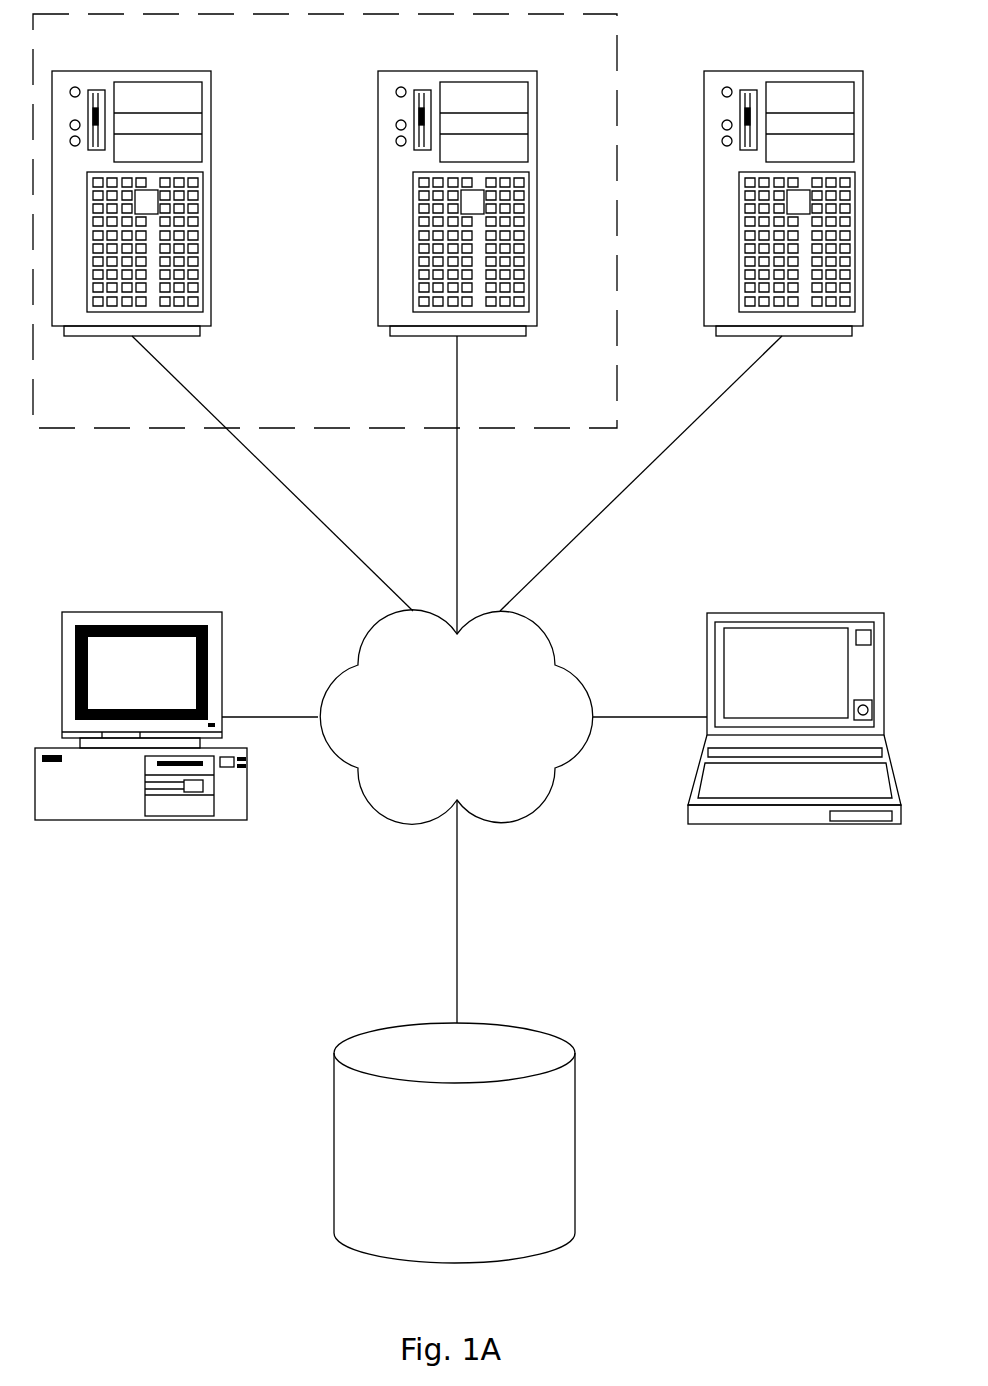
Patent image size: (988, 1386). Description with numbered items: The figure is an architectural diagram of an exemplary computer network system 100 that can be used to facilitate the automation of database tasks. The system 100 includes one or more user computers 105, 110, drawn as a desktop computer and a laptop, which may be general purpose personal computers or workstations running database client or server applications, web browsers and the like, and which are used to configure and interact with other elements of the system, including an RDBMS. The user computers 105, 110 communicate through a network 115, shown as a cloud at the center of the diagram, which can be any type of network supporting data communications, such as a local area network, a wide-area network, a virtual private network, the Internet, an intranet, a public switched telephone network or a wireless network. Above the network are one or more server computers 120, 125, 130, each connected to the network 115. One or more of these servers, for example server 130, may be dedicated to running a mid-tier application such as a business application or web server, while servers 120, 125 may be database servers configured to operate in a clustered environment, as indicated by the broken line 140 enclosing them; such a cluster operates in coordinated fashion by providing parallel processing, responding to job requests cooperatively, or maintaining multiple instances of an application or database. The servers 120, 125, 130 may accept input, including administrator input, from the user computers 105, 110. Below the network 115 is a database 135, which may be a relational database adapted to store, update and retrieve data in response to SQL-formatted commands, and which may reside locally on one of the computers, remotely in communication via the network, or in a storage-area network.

The system 100 is at (243, 976).
The user computer 105 is at (230, 822).
The user computer 110 is at (845, 825).
The network 115 is at (537, 800).
The server computer 120 is at (187, 337).
The server computer 125 is at (512, 337).
The server computer 130 is at (840, 337).
The database 135 is at (535, 1255).
The broken line 140 is at (58, 429).